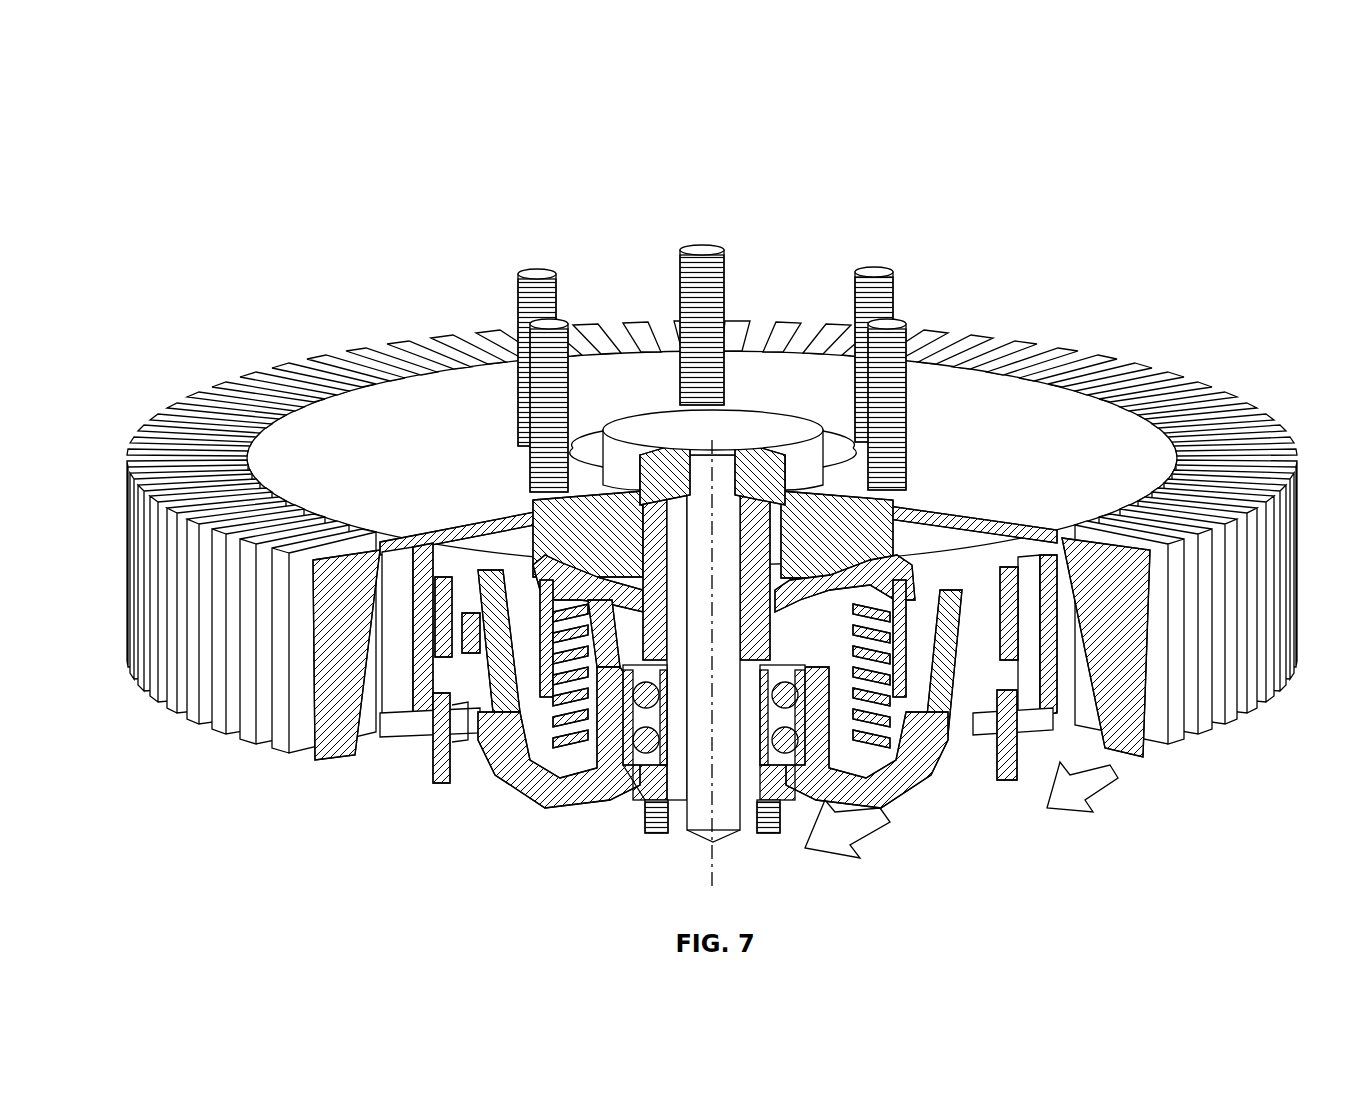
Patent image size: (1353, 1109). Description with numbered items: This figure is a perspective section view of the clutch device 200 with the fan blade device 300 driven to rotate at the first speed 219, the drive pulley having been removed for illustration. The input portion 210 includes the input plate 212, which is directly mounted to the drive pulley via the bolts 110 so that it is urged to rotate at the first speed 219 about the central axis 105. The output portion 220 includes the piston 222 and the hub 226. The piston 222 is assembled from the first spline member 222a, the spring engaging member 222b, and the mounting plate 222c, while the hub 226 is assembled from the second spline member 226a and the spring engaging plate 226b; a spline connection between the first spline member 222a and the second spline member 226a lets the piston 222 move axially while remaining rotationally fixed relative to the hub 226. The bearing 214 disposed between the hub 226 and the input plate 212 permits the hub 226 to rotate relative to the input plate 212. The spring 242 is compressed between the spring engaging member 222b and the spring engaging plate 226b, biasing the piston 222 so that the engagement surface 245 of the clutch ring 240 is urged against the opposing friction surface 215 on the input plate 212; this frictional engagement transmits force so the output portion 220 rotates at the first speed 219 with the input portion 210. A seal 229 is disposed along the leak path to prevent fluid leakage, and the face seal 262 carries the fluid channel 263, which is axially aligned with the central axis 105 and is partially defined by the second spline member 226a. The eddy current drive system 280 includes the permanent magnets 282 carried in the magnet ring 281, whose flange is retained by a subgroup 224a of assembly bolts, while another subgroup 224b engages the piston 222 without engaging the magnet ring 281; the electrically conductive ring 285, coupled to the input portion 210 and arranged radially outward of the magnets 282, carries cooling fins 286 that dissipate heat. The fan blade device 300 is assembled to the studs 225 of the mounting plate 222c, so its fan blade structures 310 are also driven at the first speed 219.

The central axis 105 is at (712, 885).
The mounting bolts 110 is at (447, 762).
The clutch device 200 is at (784, 527).
The input portion 210 is at (572, 824).
The input plate 212 is at (555, 790).
The bearing 214 is at (625, 790).
The opposing friction surface 215 is at (430, 742).
The first speed 219 is at (885, 830).
The output portion 220 is at (730, 418).
The piston 222 is at (693, 216).
The first spline member 222a is at (642, 505).
The spring engaging member 222b is at (583, 540).
The mounting plate 222c is at (590, 525).
The subgroup of assembly bolts 224a is at (510, 575).
The subgroup of assembly bolts 224b is at (930, 600).
The studs 225 is at (537, 276).
The hub 226 is at (878, 200).
The second spline member 226a is at (762, 478).
The spring engaging plate 226b is at (792, 500).
The seal 229 is at (915, 585).
The clutch ring 240 is at (498, 650).
The spring 242 is at (518, 778).
The engagement surface 245 is at (465, 742).
The face seal 262 is at (695, 825).
The fluid channel 263 is at (775, 822).
The eddy current drive system 280 is at (1018, 278).
The magnet ring 281 is at (1005, 545).
The permanent magnets 282 is at (1040, 560).
The electrically conductive ring 285 is at (1066, 575).
The cooling fins 286 is at (1087, 600).
The fan blade device 300 is at (712, 539).
The fan blade structures 310 is at (712, 621).